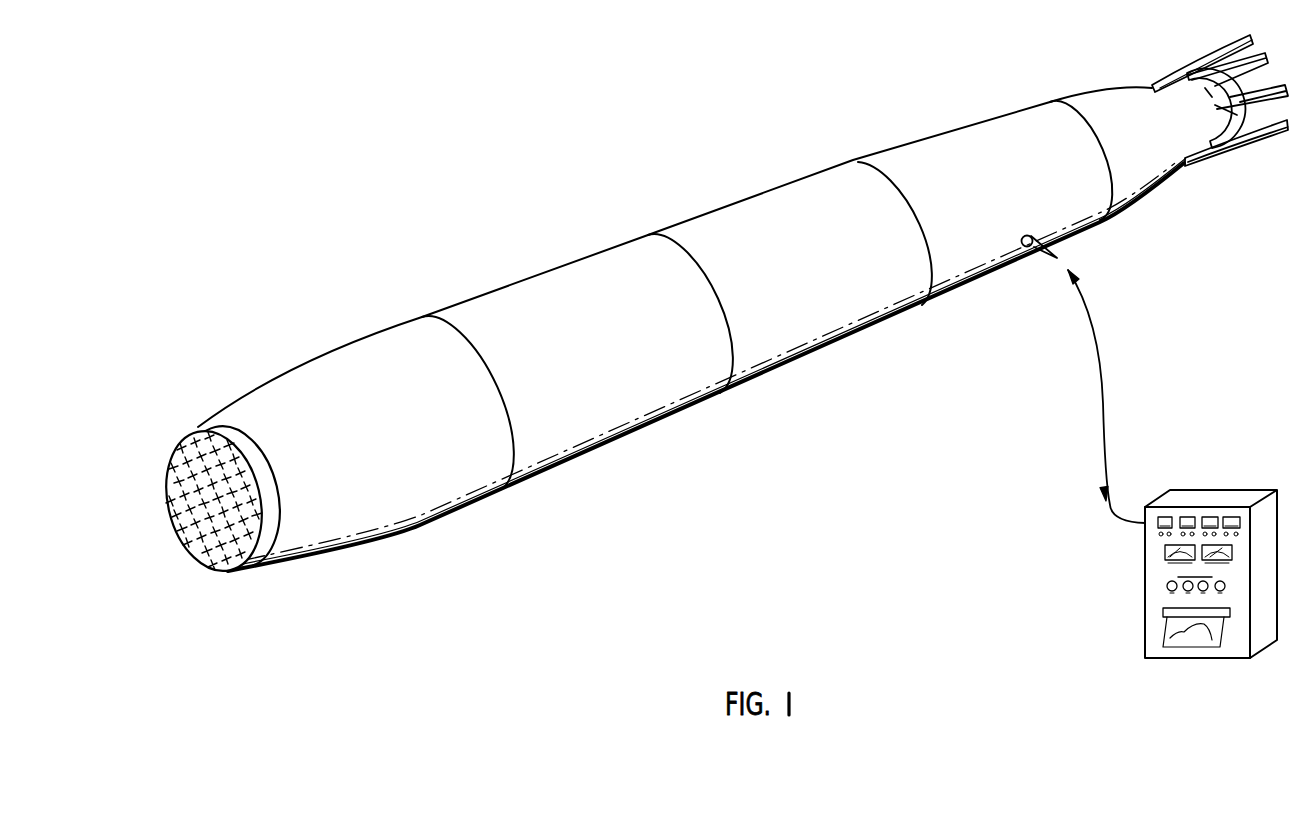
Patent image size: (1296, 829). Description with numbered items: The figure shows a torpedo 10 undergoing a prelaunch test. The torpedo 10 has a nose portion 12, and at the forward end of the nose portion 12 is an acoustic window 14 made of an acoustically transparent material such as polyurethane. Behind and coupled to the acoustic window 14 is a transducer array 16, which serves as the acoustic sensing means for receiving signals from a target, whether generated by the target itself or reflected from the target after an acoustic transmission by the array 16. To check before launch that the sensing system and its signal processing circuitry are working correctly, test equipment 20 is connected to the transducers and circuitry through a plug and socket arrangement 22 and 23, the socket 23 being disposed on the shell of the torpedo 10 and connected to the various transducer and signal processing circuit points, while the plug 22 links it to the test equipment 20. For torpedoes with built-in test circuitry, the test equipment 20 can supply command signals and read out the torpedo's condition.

The torpedo 10 is at (698, 203).
The nose portion 12 is at (170, 438).
The acoustic window 14 is at (245, 568).
The transducer array 16 is at (220, 588).
The test equipment 20 is at (1145, 579).
The plug 22 is at (1047, 258).
The socket 23 is at (1029, 233).